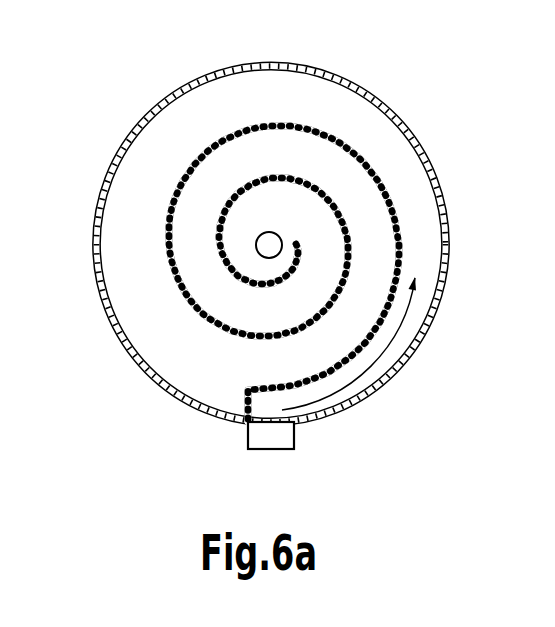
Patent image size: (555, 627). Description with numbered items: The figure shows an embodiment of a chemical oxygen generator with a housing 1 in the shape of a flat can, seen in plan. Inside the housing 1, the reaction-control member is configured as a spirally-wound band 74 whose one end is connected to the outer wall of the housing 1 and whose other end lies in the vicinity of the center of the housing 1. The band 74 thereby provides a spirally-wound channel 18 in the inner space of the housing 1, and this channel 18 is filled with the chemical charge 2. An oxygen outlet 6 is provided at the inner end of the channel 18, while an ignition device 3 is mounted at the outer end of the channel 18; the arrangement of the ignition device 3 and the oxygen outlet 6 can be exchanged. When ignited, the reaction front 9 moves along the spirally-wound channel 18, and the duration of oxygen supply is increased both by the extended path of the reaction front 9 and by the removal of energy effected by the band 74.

The housing 1 is at (146, 369).
The chemical charge 2 is at (390, 150).
The ignition device 3 is at (263, 435).
The oxygen outlet 6 is at (256, 252).
The reaction front 9 is at (392, 338).
The spirally-wound channel 18 is at (422, 247).
The spirally-wound band 74 is at (355, 365).